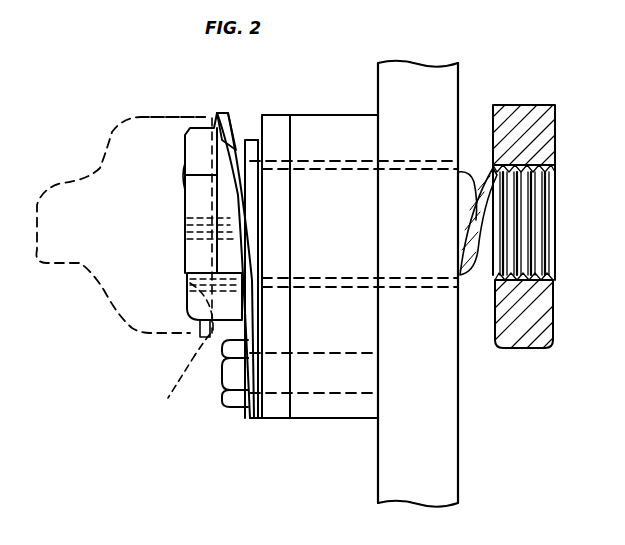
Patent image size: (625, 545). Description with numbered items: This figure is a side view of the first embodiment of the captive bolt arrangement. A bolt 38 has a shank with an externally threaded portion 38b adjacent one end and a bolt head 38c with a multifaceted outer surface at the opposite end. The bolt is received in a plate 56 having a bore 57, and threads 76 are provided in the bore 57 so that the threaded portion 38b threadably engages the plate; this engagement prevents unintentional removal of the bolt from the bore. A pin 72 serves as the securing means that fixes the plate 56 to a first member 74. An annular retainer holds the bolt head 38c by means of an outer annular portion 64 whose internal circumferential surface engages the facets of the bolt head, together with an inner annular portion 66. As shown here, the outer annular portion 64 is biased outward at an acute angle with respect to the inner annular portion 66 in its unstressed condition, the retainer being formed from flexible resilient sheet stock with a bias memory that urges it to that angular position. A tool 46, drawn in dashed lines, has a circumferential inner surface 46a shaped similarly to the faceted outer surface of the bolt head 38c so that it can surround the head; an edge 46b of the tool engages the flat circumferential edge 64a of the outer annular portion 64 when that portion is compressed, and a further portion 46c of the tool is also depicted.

The bolt 38 is at (145, 340).
The externally threaded portion 38b is at (489, 168).
The bolt head 38c is at (192, 336).
The tool 46 is at (110, 135).
The circumferential inner surface 46a is at (196, 118).
The edge 46b is at (162, 386).
The handle socket portion 46c is at (188, 291).
The plate 56 is at (265, 410).
The bore 57 is at (278, 170).
The outer annular portion 64 is at (223, 148).
The flat circumferential edge 64a is at (222, 113).
The inner annular portion 66 is at (251, 140).
The pin 72 is at (230, 382).
The first member 74 is at (356, 410).
The threads 76 is at (262, 276).